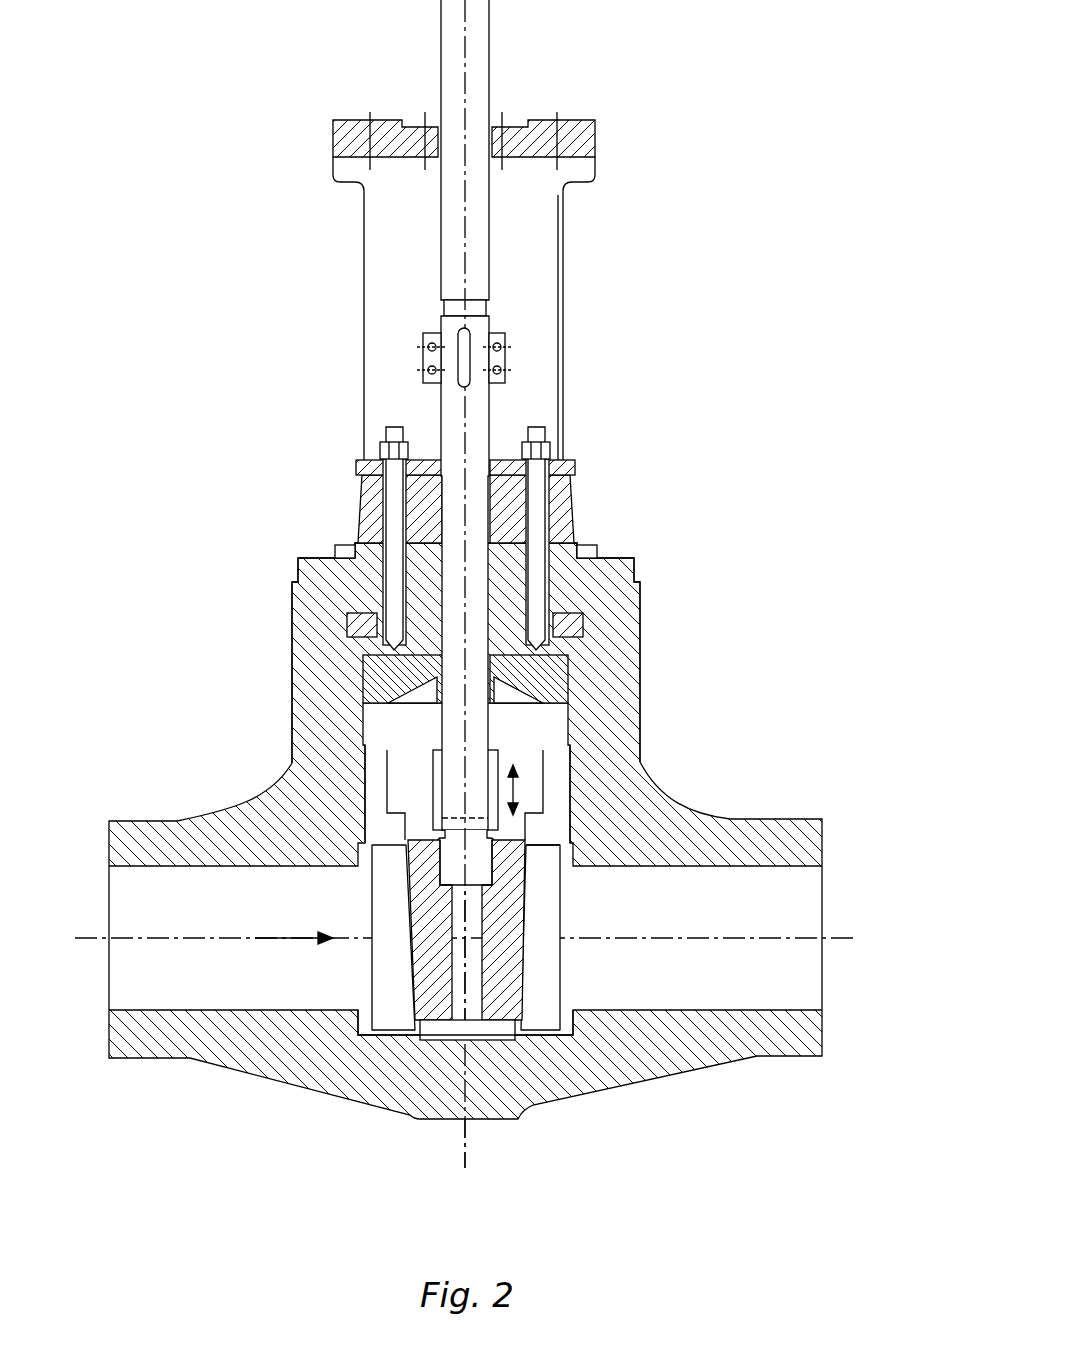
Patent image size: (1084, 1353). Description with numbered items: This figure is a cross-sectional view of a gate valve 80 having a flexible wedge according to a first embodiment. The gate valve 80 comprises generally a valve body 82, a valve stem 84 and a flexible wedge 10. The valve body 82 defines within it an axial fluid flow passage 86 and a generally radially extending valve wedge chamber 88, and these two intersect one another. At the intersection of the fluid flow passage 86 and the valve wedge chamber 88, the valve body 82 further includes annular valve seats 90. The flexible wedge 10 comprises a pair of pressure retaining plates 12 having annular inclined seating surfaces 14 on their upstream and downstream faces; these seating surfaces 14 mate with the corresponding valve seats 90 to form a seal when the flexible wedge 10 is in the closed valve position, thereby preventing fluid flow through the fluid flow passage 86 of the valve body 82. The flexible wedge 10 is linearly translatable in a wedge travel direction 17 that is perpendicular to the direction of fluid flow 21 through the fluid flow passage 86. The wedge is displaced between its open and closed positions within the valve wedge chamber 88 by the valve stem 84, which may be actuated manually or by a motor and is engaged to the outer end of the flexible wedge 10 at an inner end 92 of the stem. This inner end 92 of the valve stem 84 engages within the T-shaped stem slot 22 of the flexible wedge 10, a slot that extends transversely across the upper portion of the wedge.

The flexible wedge 10 is at (459, 846).
The pressure retaining plates 12 is at (438, 988).
The annular inclined seating surfaces 14 is at (397, 906).
The wedge travel direction 17 is at (560, 795).
The direction of fluid flow 21 is at (288, 943).
The T-shaped stem slot 22 is at (567, 855).
The gate valve 80 is at (654, 348).
The valve body 82 is at (615, 729).
The valve stem 84 is at (457, 422).
The fluid flow passage 86 is at (772, 858).
The valve wedge chamber 88 is at (565, 790).
The annular valve seats 90 is at (417, 1022).
The inner end 92 is at (403, 840).